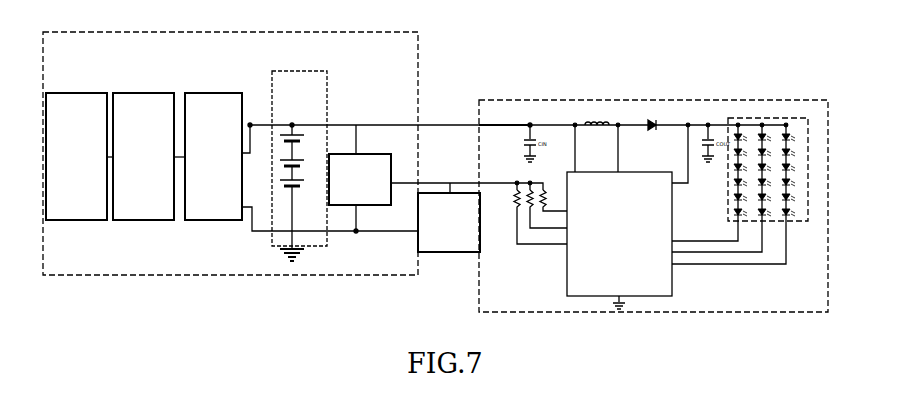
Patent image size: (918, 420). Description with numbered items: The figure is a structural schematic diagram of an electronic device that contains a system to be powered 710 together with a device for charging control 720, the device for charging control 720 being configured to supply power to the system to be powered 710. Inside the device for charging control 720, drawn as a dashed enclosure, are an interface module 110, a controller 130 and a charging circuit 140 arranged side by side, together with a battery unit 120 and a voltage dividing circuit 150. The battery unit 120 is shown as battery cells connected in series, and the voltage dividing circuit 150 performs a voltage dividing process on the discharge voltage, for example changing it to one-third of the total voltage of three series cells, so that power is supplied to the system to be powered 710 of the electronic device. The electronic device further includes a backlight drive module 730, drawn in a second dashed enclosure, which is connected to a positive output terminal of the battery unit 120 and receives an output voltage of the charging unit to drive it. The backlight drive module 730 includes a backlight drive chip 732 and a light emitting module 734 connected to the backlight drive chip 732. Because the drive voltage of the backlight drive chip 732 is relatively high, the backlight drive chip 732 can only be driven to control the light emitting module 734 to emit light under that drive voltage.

The interface module 110 is at (82, 93).
The battery unit 120 is at (318, 80).
The controller 130 is at (160, 93).
The charging circuit 140 is at (218, 93).
The voltage dividing circuit 150 is at (372, 155).
The system to be powered 710 is at (480, 194).
The device for charging control 720 is at (407, 37).
The backlight drive module 730 is at (695, 100).
The backlight drive chip 732 is at (641, 177).
The light emitting module 734 is at (786, 125).